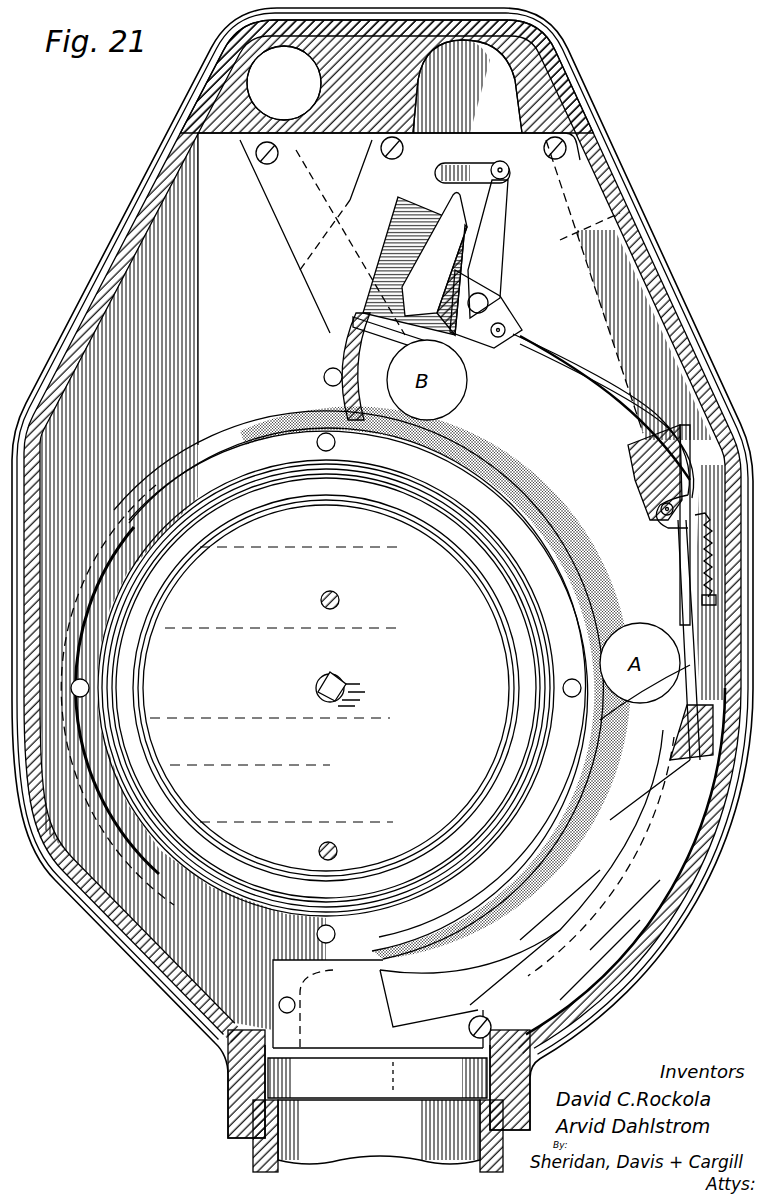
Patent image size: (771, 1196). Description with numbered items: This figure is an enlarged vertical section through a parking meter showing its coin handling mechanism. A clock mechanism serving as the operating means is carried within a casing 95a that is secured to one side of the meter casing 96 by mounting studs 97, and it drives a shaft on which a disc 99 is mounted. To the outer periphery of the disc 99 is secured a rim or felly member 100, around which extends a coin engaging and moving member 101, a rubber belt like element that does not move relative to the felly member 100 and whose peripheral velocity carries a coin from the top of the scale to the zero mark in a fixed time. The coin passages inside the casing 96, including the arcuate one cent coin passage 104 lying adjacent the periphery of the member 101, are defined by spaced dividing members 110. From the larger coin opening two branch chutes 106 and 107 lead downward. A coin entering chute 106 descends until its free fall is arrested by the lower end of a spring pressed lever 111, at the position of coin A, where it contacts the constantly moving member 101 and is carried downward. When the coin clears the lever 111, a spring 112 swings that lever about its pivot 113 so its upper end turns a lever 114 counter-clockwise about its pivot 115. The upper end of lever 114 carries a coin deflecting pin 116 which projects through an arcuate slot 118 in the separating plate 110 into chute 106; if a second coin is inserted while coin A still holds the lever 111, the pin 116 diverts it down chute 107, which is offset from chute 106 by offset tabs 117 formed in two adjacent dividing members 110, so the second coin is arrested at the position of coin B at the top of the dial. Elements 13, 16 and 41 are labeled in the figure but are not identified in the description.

The coin chute neck 13 is at (253, 1160).
The shaft 16 is at (334, 684).
The tube 41 is at (333, 1129).
The casing 95a is at (212, 659).
The meter casing 96 is at (640, 915).
The mounting studs 97 is at (336, 596).
The disc 99 is at (196, 478).
The rim or felly member 100 is at (305, 405).
The coin engaging and moving member 101 is at (262, 425).
The coin passage 104 is at (283, 215).
The branch chute 106 is at (560, 240).
The branch chute 107 is at (345, 340).
The spaced members 110 is at (562, 186).
The spring pressed lever 111 is at (688, 662).
The spring 112 is at (704, 537).
The pivot 113 is at (660, 512).
The lever 114 is at (490, 254).
The pivot 115 is at (482, 303).
The coin deflecting pin 116 is at (506, 178).
The offset tabs 117 is at (385, 285).
The arcuate slot 118 is at (470, 163).